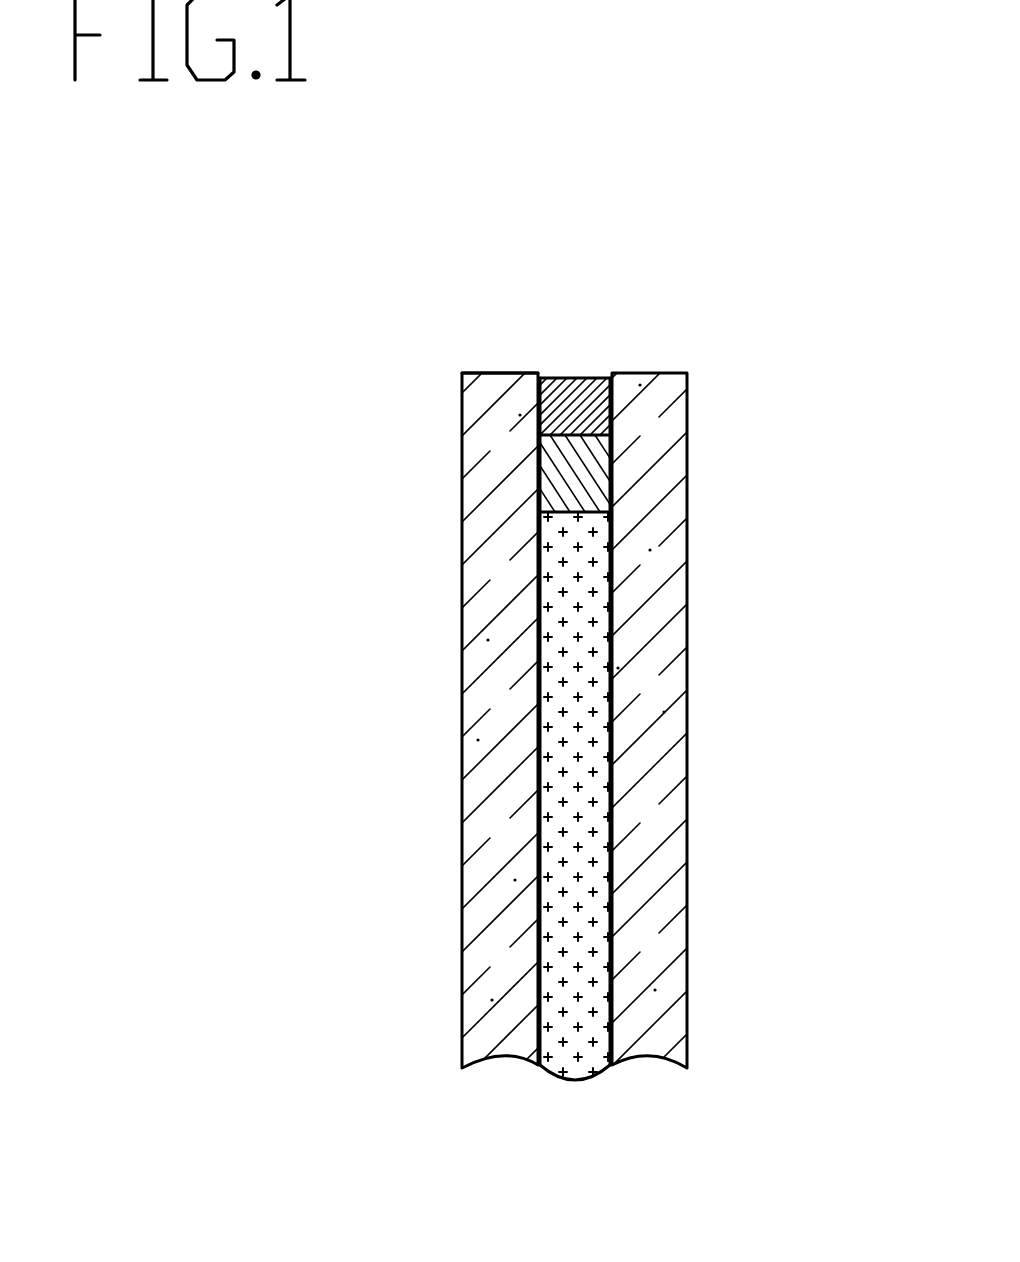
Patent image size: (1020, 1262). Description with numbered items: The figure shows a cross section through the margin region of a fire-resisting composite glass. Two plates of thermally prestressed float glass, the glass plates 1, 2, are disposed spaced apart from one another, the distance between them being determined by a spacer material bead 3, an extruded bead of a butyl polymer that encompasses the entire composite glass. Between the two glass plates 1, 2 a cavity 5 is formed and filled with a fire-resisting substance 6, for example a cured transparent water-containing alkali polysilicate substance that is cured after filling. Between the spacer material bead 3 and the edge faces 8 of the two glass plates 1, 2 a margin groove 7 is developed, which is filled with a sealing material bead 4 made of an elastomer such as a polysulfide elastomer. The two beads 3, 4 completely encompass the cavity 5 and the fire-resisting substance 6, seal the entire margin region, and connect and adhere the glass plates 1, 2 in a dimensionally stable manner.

The glass plate 1 is at (487, 453).
The glass plate 2 is at (805, 288).
The spacer material bead 3 is at (852, 557).
The sealing material bead 4 is at (852, 452).
The cavity 5 is at (540, 580).
The fire-resisting substance 6 is at (595, 1172).
The margin groove 7 is at (566, 392).
The edge faces 8 is at (500, 372).